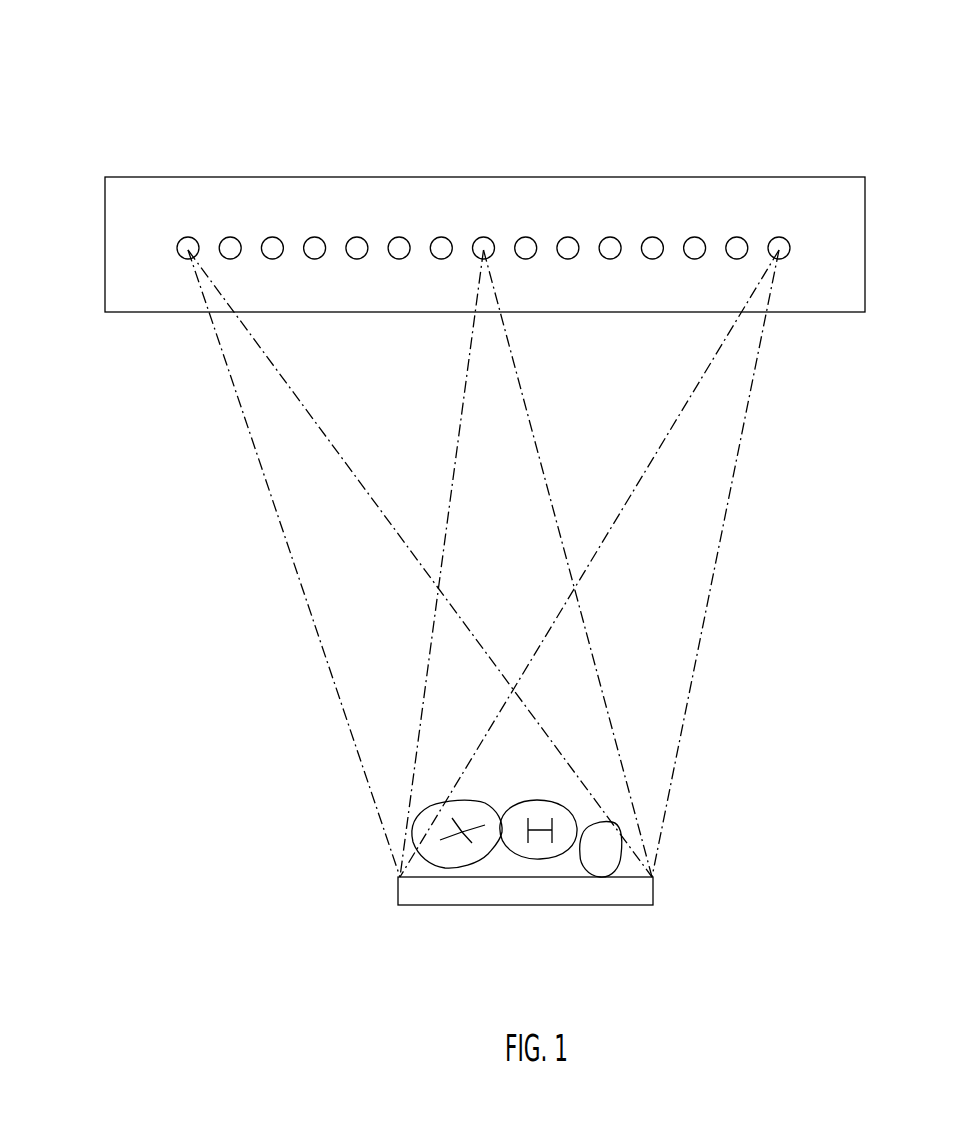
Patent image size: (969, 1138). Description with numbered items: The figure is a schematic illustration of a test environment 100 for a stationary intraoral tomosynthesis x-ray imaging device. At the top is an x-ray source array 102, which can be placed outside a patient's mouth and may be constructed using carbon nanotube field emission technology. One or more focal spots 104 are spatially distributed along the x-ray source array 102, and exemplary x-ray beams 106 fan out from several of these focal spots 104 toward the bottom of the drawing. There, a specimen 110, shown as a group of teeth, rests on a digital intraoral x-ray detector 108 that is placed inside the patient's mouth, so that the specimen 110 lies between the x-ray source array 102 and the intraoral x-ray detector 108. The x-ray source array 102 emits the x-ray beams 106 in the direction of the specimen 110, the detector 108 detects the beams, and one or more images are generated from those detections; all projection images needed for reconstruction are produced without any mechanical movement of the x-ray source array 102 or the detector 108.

The test environment 100 is at (126, 70).
The x-ray source array 102 is at (647, 177).
The focal spots 104 is at (315, 237).
The x-ray beams 106 is at (300, 527).
The digital intraoral x-ray detector 108 is at (600, 905).
The specimen 110 is at (526, 784).